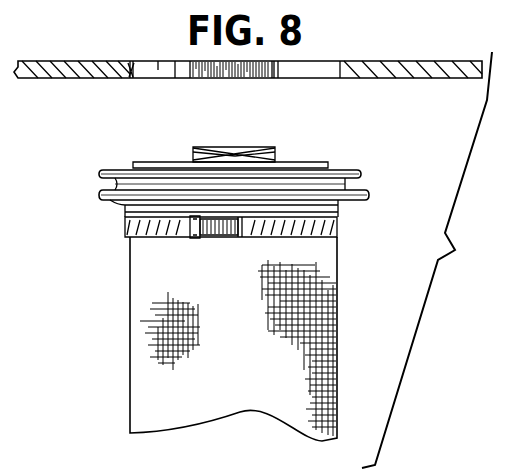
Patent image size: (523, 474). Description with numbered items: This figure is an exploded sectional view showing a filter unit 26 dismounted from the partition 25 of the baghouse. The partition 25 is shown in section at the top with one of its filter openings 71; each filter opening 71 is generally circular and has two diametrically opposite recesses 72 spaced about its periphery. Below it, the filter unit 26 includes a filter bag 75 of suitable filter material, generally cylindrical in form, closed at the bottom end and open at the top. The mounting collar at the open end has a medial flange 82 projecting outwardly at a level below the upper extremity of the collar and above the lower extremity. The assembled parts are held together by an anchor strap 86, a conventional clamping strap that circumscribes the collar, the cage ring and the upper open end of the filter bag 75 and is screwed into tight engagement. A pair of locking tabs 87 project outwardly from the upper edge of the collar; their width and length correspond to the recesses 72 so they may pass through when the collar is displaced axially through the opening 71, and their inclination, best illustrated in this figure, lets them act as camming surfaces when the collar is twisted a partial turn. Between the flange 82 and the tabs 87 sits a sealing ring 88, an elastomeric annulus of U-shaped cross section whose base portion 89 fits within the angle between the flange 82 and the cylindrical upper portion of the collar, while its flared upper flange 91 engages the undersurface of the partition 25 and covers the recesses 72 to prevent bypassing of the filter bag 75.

The partition 25 is at (358, 62).
The filter opening 71 is at (138, 75).
The recesses 72 is at (250, 73).
The locking tabs 87 is at (195, 152).
The upper flange 91 is at (357, 171).
The base portion 89 is at (347, 181).
The sealing ring 88 is at (346, 205).
The medial flange 82 is at (108, 201).
The anchor strap 86 is at (127, 236).
The filter unit 26 is at (129, 339).
The filter bag 75 is at (310, 348).